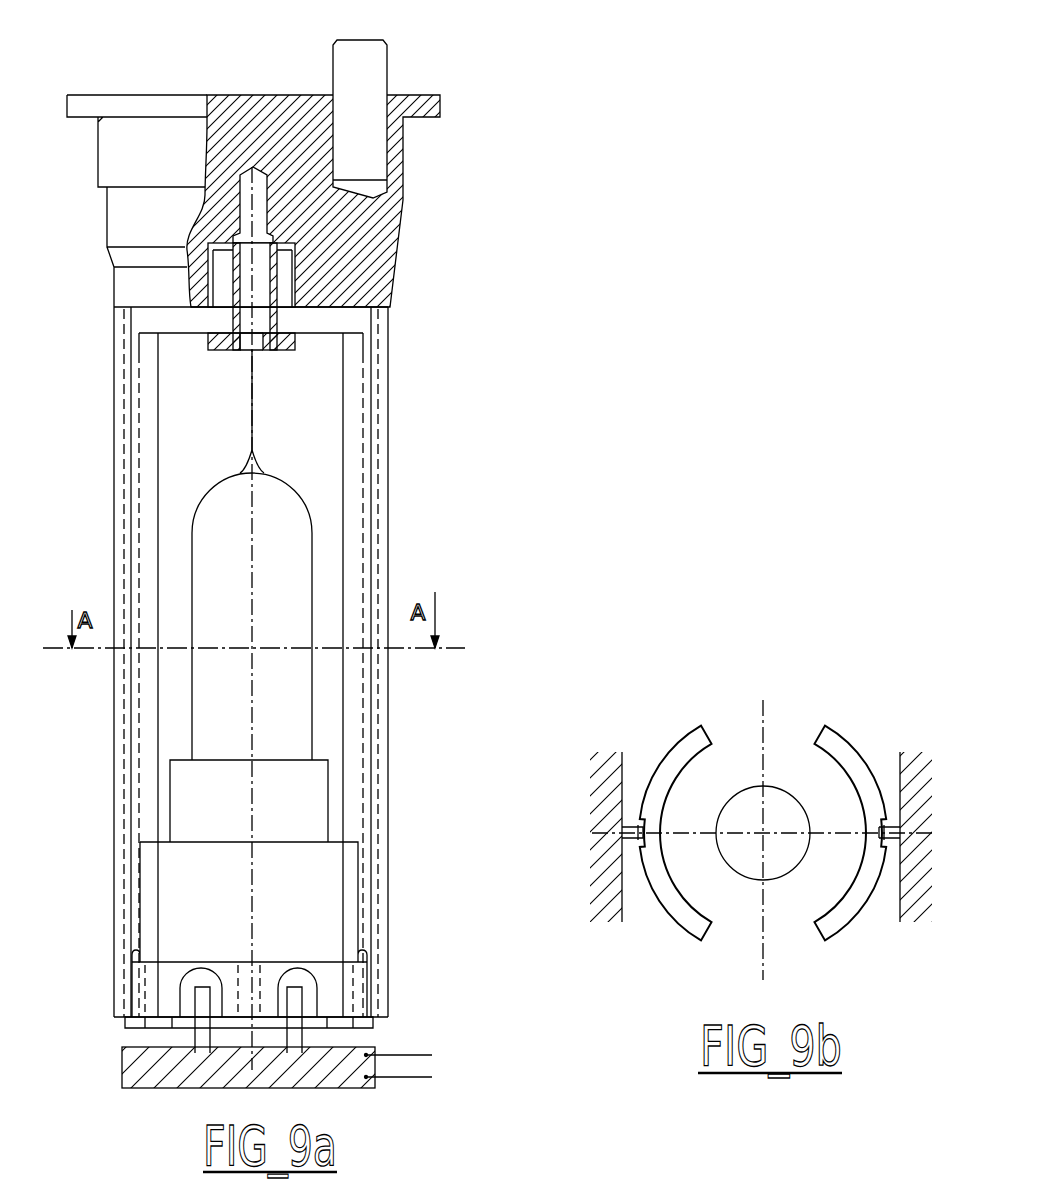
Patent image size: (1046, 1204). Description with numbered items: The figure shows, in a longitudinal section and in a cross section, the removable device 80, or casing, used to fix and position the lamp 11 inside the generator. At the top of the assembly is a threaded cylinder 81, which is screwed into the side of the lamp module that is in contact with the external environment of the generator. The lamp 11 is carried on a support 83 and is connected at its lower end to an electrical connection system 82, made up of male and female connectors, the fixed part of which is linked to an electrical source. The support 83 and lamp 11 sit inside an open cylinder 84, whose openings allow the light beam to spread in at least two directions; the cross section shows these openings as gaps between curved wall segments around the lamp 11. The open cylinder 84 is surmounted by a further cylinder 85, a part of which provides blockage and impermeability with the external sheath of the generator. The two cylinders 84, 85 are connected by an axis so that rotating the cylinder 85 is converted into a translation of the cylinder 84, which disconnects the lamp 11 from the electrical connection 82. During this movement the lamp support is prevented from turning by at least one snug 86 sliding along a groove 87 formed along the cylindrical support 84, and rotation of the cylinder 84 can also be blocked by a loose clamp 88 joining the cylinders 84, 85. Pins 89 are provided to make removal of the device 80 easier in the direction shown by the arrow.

In FIG. 9A, the lamp 11 is at (215, 567).
In FIG. 9B, the lamp 11 is at (772, 865).
In FIG. 9A, the removable device 80 is at (90, 689).
In FIG. 9A, the threaded cylinder 81 is at (125, 147).
In FIG. 9A, the electrical connection system 82 is at (190, 1005).
In FIG. 9A, the support 83 is at (190, 797).
In FIG. 9A, the open cylinder 84 is at (147, 320).
In FIG. 9B, the open cylinder 84 is at (682, 920).
In FIG. 9A, the cylinder 85 is at (137, 283).
In FIG. 9A, the snug 86 is at (128, 486).
In FIG. 9B, the snug 86 is at (620, 834).
In FIG. 9A, the groove 87 is at (137, 865).
In FIG. 9B, the groove 87 is at (633, 825).
In FIG. 9A, the loose clamp 88 is at (260, 290).
In FIG. 9A, the pins 89 is at (370, 73).